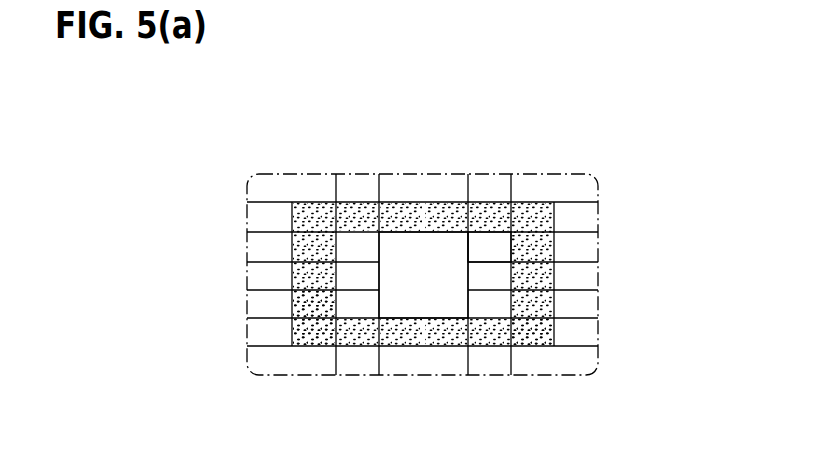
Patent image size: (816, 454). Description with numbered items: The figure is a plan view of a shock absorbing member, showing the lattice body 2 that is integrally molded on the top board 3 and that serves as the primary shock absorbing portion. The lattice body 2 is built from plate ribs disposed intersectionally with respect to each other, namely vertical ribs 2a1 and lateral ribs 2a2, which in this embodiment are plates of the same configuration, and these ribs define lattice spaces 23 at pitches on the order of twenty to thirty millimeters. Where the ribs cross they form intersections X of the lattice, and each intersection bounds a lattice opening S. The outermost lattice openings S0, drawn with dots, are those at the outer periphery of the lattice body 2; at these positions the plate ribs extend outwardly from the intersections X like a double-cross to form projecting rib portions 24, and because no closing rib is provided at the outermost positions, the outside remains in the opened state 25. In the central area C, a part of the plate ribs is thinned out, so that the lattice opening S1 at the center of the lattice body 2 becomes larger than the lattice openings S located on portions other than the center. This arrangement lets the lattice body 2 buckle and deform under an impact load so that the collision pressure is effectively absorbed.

The lattice body 2 is at (226, 276).
The top board 3 is at (300, 174).
The lattice space 23 is at (312, 303).
The projecting rib portion 24 is at (337, 194).
The opened state 25 is at (265, 220).
The vertical rib 2a1 is at (513, 216).
The lateral rib 2a2 is at (528, 348).
The central area C is at (398, 245).
The lattice opening S is at (486, 248).
The lattice opening at the center S1 is at (392, 290).
The outermost lattice opening S0 is at (360, 337).
The intersection of the lattice X is at (556, 228).